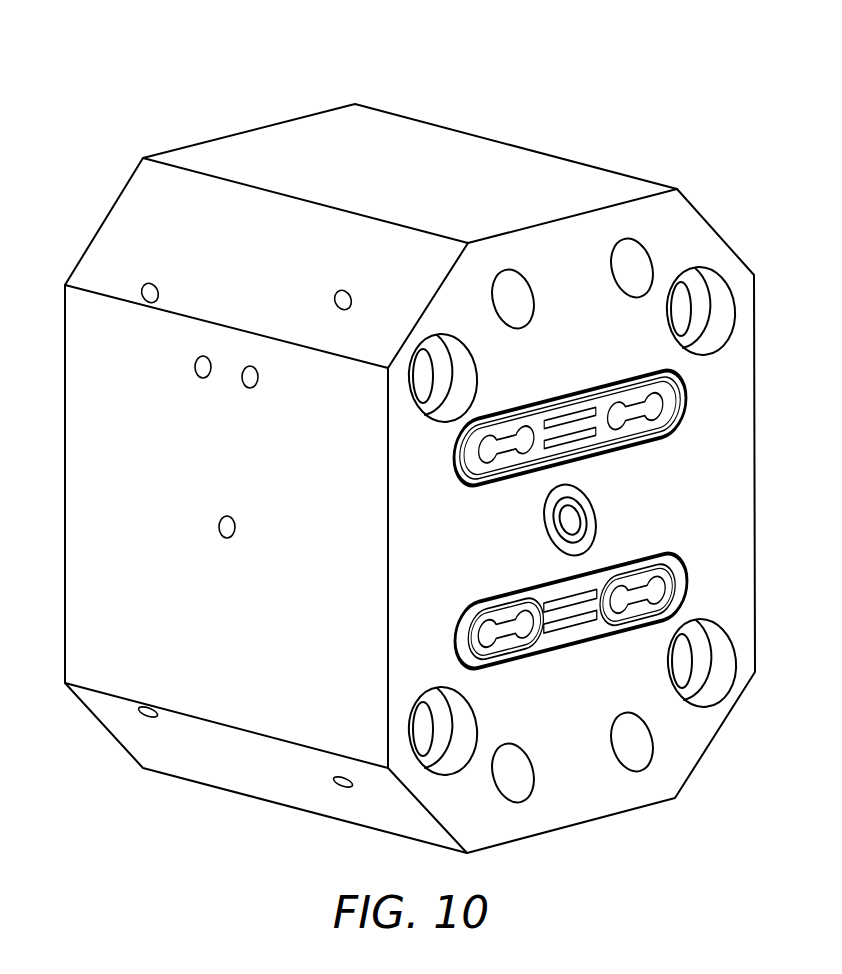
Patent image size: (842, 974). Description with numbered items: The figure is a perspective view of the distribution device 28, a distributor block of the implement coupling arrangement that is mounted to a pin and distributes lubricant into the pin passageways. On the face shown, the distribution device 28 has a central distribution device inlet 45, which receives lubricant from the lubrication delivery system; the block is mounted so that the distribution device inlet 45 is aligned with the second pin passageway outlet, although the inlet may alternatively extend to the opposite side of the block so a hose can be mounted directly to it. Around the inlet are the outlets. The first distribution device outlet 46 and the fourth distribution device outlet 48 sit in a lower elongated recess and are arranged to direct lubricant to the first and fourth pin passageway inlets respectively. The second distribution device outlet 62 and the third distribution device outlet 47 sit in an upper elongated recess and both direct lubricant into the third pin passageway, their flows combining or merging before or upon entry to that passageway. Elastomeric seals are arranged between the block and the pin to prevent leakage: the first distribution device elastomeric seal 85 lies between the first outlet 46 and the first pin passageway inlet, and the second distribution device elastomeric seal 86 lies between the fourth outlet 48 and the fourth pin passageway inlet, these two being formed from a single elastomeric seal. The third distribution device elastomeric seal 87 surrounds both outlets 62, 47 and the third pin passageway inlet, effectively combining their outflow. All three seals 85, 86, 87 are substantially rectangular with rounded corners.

The distribution device 28 is at (538, 100).
The distribution device inlet 45 is at (578, 520).
The first distribution device outlet 46 is at (501, 634).
The third distribution device outlet 47 is at (503, 448).
The fourth distribution device outlet 48 is at (637, 600).
The second distribution device outlet 62 is at (678, 421).
The first distribution device elastomeric seal 85 is at (462, 644).
The second distribution device elastomeric seal 86 is at (686, 581).
The third distribution device elastomeric seal 87 is at (688, 391).